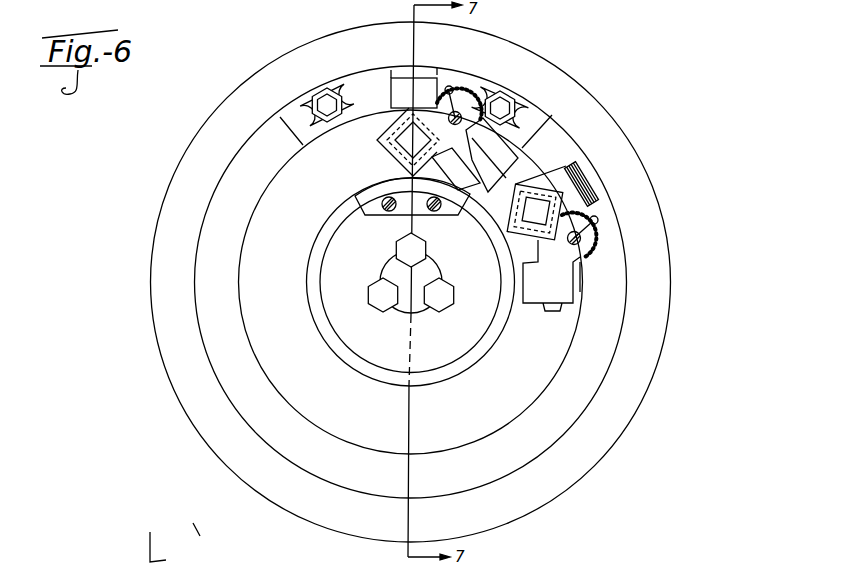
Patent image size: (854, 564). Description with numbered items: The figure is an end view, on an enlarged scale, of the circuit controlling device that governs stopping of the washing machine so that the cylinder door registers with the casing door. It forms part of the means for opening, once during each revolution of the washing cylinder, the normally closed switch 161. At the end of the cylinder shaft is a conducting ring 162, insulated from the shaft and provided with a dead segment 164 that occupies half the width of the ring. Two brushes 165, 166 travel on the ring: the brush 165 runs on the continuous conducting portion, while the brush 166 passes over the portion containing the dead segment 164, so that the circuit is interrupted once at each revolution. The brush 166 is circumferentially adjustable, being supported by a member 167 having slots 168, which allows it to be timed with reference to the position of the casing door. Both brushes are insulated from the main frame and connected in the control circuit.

The normally closed switch 161 is at (168, 187).
The conducting ring 162 is at (314, 283).
The dead segment 164 is at (372, 200).
The brush 165 is at (517, 290).
The brush 166 is at (503, 140).
The member 167 is at (402, 87).
The slots 168 is at (348, 92).